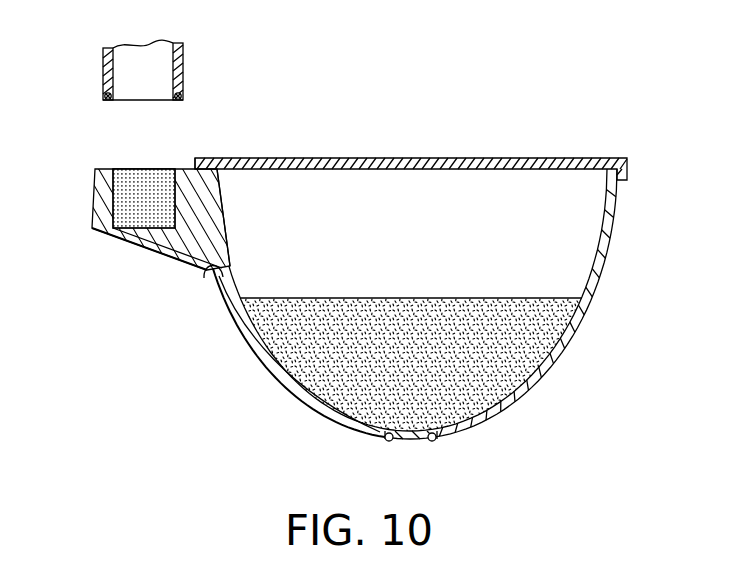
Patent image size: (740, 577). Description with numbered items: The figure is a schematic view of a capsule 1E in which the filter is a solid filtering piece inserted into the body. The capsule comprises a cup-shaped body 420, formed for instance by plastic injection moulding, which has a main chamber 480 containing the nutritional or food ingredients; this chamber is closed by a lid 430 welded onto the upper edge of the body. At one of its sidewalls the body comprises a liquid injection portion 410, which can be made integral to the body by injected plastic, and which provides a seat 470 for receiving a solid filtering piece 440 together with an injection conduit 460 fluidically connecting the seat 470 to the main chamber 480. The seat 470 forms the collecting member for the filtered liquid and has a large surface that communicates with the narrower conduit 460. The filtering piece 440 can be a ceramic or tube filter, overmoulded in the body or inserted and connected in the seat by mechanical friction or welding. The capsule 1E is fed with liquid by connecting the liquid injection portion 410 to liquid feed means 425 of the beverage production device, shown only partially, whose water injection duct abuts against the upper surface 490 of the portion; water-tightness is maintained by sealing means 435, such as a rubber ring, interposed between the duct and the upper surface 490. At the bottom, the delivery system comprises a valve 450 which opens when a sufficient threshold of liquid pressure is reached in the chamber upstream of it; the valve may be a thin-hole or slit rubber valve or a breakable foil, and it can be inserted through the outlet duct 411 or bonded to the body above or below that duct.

The liquid injection portion 410 is at (73, 173).
The outlet duct 411 is at (413, 442).
The cup-shaped body 420 is at (617, 217).
The liquid feed means 425 is at (185, 55).
The lid 430 is at (597, 158).
The sealing means 435 is at (104, 97).
The solid filtering piece 440 is at (118, 169).
The valve 450 is at (388, 443).
The injection conduit 460 is at (207, 272).
The seat 470 is at (190, 192).
The main chamber 480 is at (520, 368).
The upper surface 490 is at (188, 160).
The capsule 1E is at (214, 390).